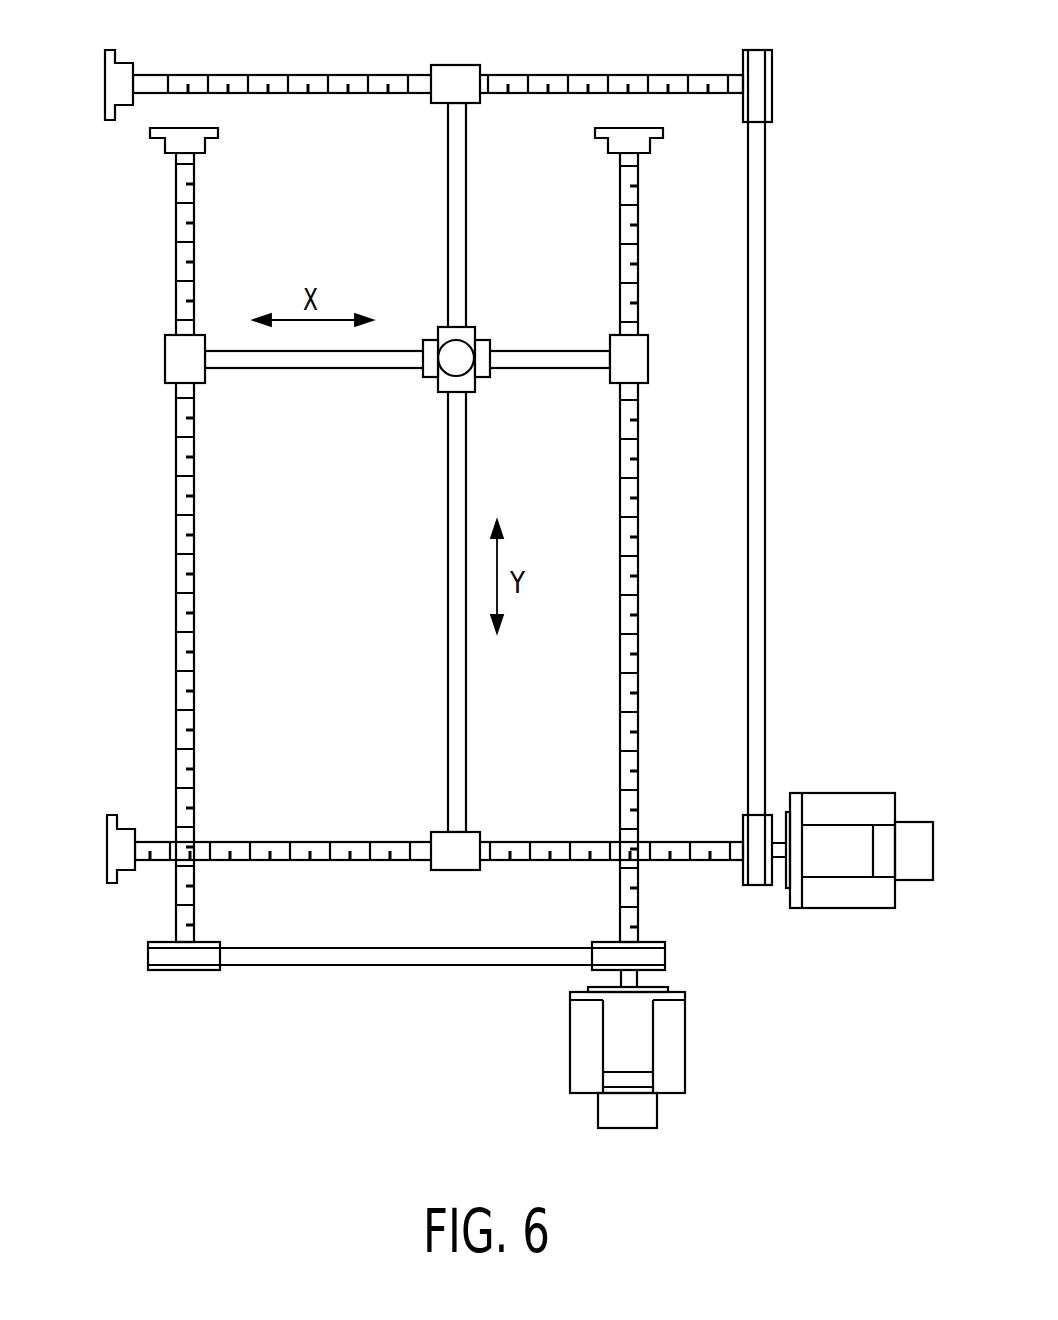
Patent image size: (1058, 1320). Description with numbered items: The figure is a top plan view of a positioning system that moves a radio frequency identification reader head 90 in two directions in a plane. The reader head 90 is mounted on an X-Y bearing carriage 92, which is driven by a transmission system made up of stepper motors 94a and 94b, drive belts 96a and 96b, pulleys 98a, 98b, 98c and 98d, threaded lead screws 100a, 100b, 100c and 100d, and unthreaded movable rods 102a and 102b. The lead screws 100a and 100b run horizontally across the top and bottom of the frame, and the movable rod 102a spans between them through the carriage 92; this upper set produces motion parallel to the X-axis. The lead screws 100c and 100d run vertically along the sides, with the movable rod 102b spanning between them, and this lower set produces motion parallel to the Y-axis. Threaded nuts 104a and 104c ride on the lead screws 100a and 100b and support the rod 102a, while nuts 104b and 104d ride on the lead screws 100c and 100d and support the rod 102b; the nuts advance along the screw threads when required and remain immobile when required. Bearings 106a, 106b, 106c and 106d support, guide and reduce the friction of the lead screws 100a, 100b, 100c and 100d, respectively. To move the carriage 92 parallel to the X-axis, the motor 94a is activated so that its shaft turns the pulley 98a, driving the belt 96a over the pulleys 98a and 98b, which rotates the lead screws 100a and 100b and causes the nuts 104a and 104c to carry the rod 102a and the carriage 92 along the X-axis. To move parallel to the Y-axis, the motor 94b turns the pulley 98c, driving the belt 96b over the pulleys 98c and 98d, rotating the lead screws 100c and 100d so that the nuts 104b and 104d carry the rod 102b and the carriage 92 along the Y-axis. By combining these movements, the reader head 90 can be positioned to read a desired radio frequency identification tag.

The radio frequency identification reader head 90 is at (460, 352).
The X-Y bearing carriage 92 is at (483, 368).
The stepper motor 94a is at (835, 897).
The stepper motor 94b is at (673, 1060).
The drive belt 96a is at (766, 637).
The drive belt 96b is at (398, 967).
The pulley 98a is at (743, 868).
The pulley 98b is at (773, 88).
The pulley 98c is at (603, 940).
The pulley 98d is at (183, 967).
The lead screw 100a is at (347, 842).
The lead screw 100b is at (268, 75).
The lead screw 100c is at (176, 567).
The lead screw 100d is at (639, 632).
The movable rod 102a is at (447, 675).
The movable rod 102b is at (402, 352).
The nut 104a is at (435, 838).
The nut 104b is at (165, 362).
The nut 104c is at (453, 75).
The nut 104d is at (648, 360).
The bearing 106a is at (113, 850).
The bearing 106b is at (113, 88).
The bearing 106c is at (220, 130).
The bearing 106d is at (596, 132).